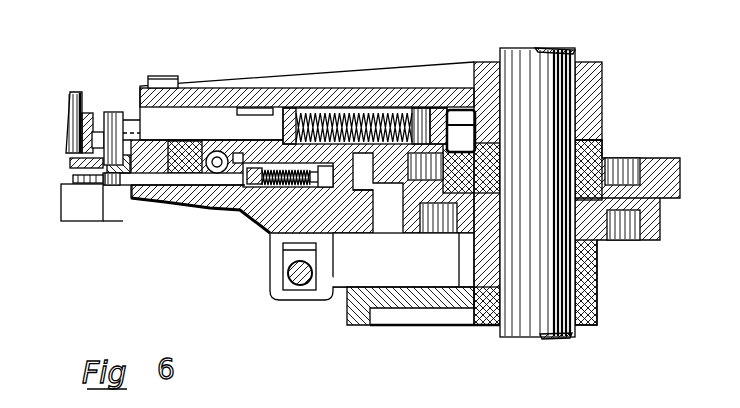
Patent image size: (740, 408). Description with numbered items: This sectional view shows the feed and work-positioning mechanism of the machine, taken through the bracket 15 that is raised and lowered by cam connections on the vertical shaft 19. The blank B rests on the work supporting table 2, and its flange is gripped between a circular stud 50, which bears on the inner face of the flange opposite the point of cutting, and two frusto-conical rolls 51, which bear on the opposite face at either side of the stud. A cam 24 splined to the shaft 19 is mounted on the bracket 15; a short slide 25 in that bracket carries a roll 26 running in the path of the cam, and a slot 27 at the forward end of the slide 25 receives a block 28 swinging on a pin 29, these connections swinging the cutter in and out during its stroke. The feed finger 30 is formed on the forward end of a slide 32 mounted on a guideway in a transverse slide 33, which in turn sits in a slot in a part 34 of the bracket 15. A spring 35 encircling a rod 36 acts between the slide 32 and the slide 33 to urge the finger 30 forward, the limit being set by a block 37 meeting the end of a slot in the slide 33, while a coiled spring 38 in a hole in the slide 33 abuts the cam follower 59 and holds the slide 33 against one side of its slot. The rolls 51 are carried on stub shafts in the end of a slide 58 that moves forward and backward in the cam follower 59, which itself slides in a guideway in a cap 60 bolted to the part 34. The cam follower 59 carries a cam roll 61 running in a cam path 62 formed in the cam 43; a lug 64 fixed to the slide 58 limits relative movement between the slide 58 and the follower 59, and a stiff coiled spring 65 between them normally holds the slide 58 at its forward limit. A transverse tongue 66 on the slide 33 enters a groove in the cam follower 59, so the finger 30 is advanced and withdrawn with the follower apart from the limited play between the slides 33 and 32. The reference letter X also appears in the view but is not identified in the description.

The work supporting table 2 is at (78, 201).
The bracket 15 is at (345, 317).
The vertical shaft 19 is at (573, 50).
The cam 24 is at (597, 243).
The short slide 25 is at (407, 278).
The roll 26 is at (447, 207).
The slot 27 is at (316, 248).
The block 28 is at (284, 262).
The pin 29 is at (298, 282).
The feed finger 30 is at (118, 190).
The slide 32 is at (210, 180).
The transverse slide 33 is at (227, 178).
The part of bracket 34 is at (283, 230).
The spring 35 is at (268, 226).
The rod 36 is at (340, 187).
The block 37 is at (248, 178).
The coiled spring 38 is at (203, 176).
The cam 43 is at (601, 148).
The circular stud 50 is at (77, 180).
The rolls 51 is at (110, 158).
The slide 58 is at (140, 118).
The cam follower 59 is at (273, 143).
The cap 60 is at (215, 105).
The cam roll 61 is at (414, 171).
The cam path 62 is at (636, 158).
The lug 64 is at (250, 110).
The stiff coiled spring 65 is at (345, 110).
The transverse tongue 66 is at (188, 147).
The blank B is at (72, 168).
The reference point X is at (103, 222).